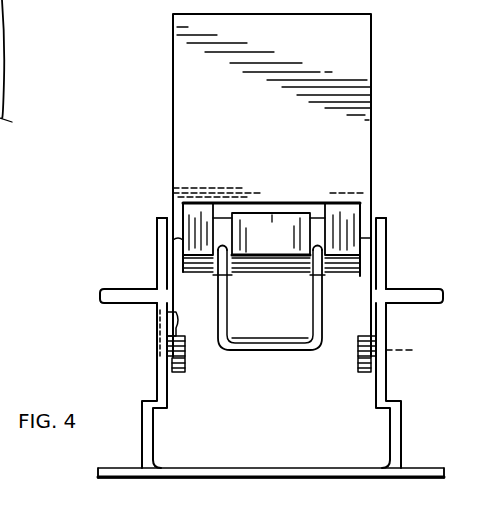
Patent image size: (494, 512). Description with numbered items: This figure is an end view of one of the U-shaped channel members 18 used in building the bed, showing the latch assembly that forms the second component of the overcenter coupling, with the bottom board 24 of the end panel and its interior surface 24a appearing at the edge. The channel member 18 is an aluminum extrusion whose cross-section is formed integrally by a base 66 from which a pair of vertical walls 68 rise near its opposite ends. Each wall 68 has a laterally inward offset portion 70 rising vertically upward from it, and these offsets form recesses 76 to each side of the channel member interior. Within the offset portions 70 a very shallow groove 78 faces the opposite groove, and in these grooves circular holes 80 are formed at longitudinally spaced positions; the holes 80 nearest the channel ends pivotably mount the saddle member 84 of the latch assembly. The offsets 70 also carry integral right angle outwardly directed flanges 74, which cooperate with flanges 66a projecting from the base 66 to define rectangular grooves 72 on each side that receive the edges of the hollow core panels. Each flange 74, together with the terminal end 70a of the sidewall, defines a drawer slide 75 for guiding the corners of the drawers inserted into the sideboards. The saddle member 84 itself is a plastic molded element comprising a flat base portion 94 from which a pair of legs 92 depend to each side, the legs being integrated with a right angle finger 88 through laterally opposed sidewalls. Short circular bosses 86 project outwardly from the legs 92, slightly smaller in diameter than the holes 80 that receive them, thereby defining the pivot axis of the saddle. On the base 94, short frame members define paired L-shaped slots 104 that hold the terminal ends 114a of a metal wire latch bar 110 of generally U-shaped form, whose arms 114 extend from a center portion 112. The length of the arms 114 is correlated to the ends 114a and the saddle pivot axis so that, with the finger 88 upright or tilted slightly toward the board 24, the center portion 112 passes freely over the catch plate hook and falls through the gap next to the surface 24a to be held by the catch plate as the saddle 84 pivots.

The U-shaped channel member 18 is at (405, 412).
The bottom board 24 is at (40, 92).
The interior surface 24a is at (20, 135).
The base 66 is at (300, 480).
The flanges 66a is at (98, 471).
The vertical walls 68 is at (142, 440).
The laterally inward offset portions 70 is at (163, 397).
The terminal ends 70a is at (161, 216).
The rectangular channels or grooves 72 is at (147, 329).
The right angle outwardly directed flanges 74 is at (111, 300).
The drawer slides 75 is at (138, 278).
The recesses 76 is at (159, 448).
The shallow groove 78 is at (158, 342).
The circular openings or holes 80 is at (409, 362).
The saddle member 84 is at (372, 112).
The circular bosses 86 is at (174, 328).
The right angle finger 88 is at (354, 148).
The legs 92 is at (178, 347).
The flat base portion 94 is at (286, 263).
The L-shaped slots 104 is at (310, 229).
The latch bar 110 is at (289, 350).
The center portion 112 is at (242, 351).
The arms 114 is at (313, 300).
The terminal ends 114a is at (203, 250).